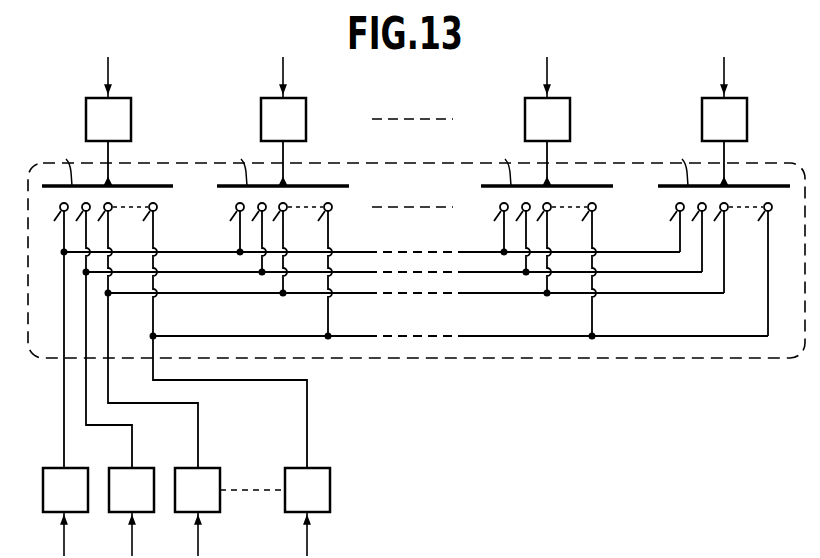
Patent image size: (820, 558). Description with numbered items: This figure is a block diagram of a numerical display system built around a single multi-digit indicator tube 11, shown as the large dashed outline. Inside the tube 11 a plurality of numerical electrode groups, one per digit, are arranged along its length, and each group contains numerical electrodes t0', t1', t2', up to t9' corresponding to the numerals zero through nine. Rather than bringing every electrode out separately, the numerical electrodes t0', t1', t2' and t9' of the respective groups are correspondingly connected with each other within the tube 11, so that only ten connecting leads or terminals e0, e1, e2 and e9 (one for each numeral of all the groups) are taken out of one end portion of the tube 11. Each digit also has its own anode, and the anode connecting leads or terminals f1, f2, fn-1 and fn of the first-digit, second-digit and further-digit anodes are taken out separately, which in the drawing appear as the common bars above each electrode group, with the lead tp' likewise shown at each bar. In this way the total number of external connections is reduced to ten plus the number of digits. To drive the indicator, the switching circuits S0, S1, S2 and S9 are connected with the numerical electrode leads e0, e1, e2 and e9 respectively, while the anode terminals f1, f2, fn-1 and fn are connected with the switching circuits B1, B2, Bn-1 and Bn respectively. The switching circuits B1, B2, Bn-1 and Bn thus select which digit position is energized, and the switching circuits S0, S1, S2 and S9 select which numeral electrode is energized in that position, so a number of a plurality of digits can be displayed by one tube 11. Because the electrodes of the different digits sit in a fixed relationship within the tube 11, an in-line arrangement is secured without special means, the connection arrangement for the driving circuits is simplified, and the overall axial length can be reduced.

The tube 11 is at (410, 172).
The switching circuit Bn is at (108, 99).
The switching circuit Bn-1 is at (283, 99).
The switching circuit B2 is at (547, 99).
The switching circuit B1 is at (724, 99).
The anode connecting lead fn is at (109, 155).
The anode connecting lead fn-1 is at (284, 155).
The anode connecting lead f2 is at (548, 155).
The anode connecting lead f1 is at (725, 155).
The common contact tp' is at (375, 165).
The numerical electrode t0' is at (363, 229).
The numerical electrode t1' is at (386, 239).
The numerical electrode t2' is at (408, 249).
The numerical electrode t9' is at (442, 271).
The connecting lead e0 is at (64, 432).
The connecting lead e1 is at (131, 432).
The connecting lead e2 is at (197, 432).
The connecting lead e9 is at (306, 430).
The switching circuit S0 is at (65, 512).
The switching circuit S1 is at (131, 512).
The switching circuit S2 is at (197, 512).
The switching circuit S9 is at (307, 512).